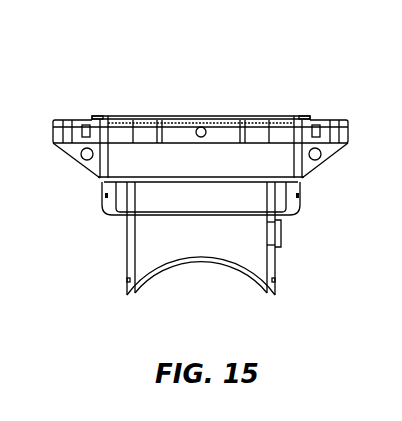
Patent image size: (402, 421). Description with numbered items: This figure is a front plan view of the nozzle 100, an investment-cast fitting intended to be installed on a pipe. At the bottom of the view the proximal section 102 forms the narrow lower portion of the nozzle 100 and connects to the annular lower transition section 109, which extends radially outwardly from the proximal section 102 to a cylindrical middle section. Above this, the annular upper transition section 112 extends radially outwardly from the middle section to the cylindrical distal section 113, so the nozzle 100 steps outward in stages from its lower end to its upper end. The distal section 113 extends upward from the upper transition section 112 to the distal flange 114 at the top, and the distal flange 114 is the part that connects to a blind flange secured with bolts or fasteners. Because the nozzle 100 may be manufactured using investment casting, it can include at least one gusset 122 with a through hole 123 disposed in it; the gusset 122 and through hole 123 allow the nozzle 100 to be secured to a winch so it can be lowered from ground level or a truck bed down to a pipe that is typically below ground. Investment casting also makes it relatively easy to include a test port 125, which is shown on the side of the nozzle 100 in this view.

The nozzle 100 is at (80, 66).
The proximal section 102 is at (277, 268).
The lower transition section 109 is at (124, 180).
The upper transition section 112 is at (288, 119).
The distal section 113 is at (331, 165).
The distal flange 114 is at (328, 120).
The gusset 122 is at (72, 151).
The through hole 123 is at (86, 156).
The test port 125 is at (282, 234).